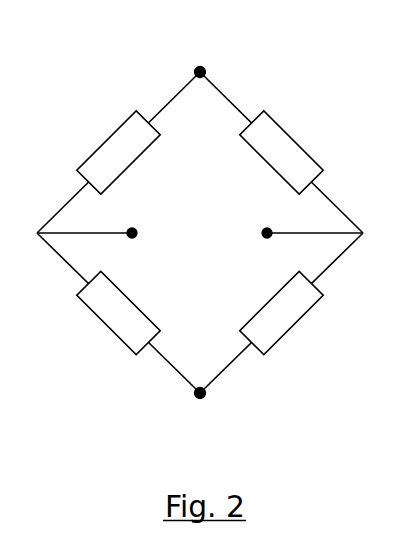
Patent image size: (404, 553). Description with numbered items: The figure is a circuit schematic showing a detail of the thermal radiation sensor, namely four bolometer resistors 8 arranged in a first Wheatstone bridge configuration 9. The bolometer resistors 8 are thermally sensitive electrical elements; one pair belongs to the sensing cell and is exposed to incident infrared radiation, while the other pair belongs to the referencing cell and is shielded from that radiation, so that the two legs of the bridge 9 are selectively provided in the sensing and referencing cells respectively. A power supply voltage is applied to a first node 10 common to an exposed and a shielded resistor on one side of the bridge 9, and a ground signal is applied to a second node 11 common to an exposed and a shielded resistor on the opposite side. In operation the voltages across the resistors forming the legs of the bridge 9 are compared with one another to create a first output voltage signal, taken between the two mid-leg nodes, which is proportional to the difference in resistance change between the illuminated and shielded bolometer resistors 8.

The bolometer resistors 8 is at (92, 153).
The first Wheatstone bridge configuration 9 is at (290, 62).
The first node 10 is at (198, 72).
The second node 11 is at (197, 394).